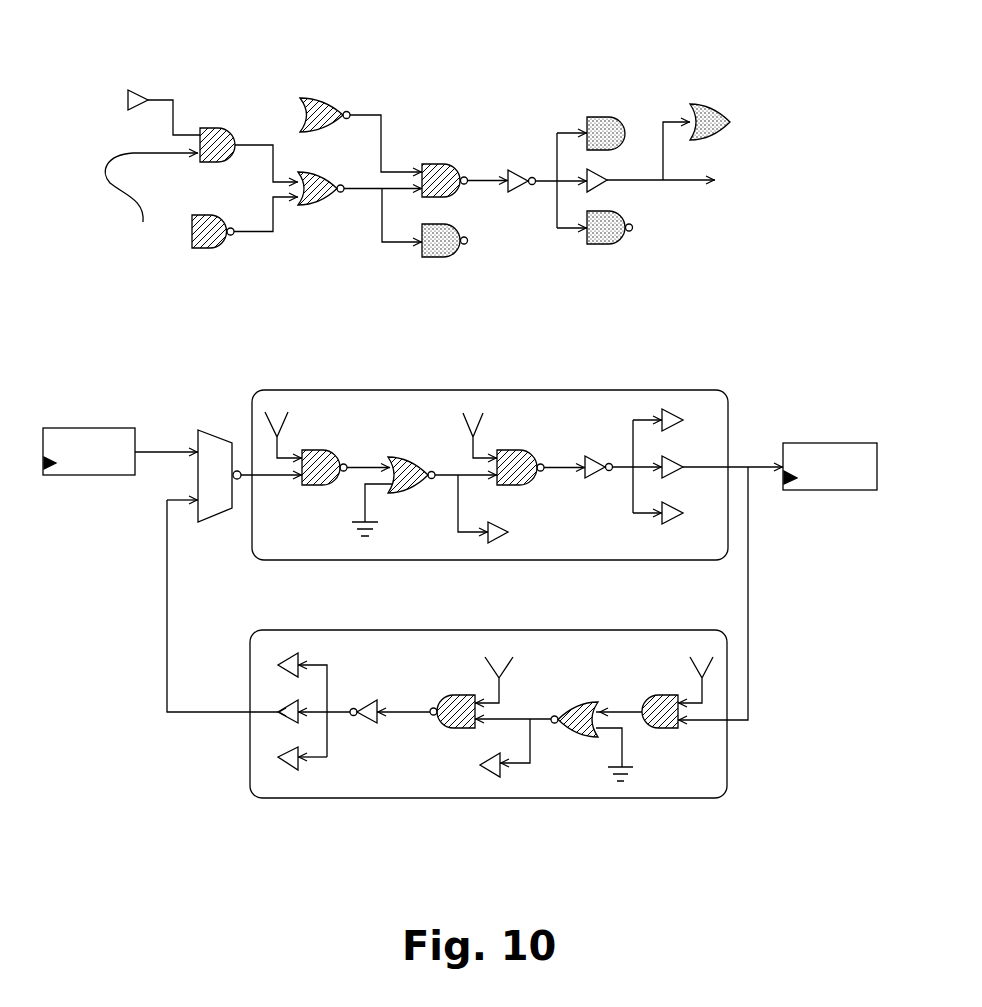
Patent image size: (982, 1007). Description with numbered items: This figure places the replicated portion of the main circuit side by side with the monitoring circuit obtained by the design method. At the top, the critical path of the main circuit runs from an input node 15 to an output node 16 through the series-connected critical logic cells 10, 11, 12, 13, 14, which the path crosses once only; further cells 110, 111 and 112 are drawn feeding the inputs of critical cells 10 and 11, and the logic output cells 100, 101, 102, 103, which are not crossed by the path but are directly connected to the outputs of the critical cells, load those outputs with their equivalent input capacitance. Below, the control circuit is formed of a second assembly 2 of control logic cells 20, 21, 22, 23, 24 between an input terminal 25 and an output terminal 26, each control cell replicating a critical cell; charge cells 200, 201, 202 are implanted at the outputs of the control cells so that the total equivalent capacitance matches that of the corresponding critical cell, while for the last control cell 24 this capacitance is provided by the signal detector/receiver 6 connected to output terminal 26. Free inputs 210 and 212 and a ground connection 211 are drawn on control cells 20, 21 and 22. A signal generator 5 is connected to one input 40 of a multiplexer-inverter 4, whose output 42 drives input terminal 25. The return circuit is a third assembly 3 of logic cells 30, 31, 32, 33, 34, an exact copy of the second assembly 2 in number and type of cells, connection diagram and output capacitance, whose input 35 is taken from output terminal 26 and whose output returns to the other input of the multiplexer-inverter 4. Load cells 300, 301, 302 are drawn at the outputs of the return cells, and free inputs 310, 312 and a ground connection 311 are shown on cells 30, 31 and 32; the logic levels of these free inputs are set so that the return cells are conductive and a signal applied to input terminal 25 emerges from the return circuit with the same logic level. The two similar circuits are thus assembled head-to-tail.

The input buffer 110 is at (152, 90).
The critical logic cell 10 is at (217, 128).
The NOR gate 112 is at (322, 104).
The input node 15 is at (151, 200).
The critical logic cell 11 is at (320, 205).
The NAND gate 111 is at (208, 243).
The critical logic cell 12 is at (438, 166).
The logic output cell 100 is at (442, 258).
The critical logic cell 13 is at (527, 168).
The logic output cell 101 is at (602, 125).
The critical logic cell 14 is at (601, 183).
The output node 16 is at (717, 182).
The logic output cell 102 is at (605, 247).
The logic output cell 103 is at (730, 122).
The signal generator 5 is at (83, 463).
The input of multiplexer-inverter 40 is at (157, 448).
The multiplexer-inverter 4 is at (222, 503).
The output of multiplexer-inverter 42 is at (260, 473).
The input terminal 25 is at (270, 477).
The control input 210 is at (283, 415).
The second assembly 2 is at (490, 475).
The control logic cell 20 is at (315, 453).
The control logic cell 21 is at (403, 455).
The ground connection 211 is at (385, 533).
The charge cell 200 is at (507, 543).
The control input 212 is at (483, 413).
The control logic cell 22 is at (513, 453).
The control logic cell 23 is at (600, 460).
The charge cell 201 is at (677, 415).
The control logic cell 24 is at (673, 473).
The charge cell 202 is at (675, 523).
The output terminal 26 is at (698, 467).
The signal detector/receiver 6 is at (812, 448).
The input of third assembly 35 is at (750, 628).
The third assembly 3 is at (728, 758).
The buffer 301 is at (290, 662).
The logic cell of third assembly 34 is at (290, 715).
The buffer 302 is at (290, 762).
The logic cell of third assembly 33 is at (363, 720).
The logic cell of third assembly 32 is at (447, 720).
The control input 312 is at (508, 660).
The buffer 300 is at (492, 773).
The logic cell of third assembly 31 is at (578, 733).
The ground connection 311 is at (628, 778).
The logic cell of third assembly 30 is at (660, 723).
The control input 310 is at (692, 670).